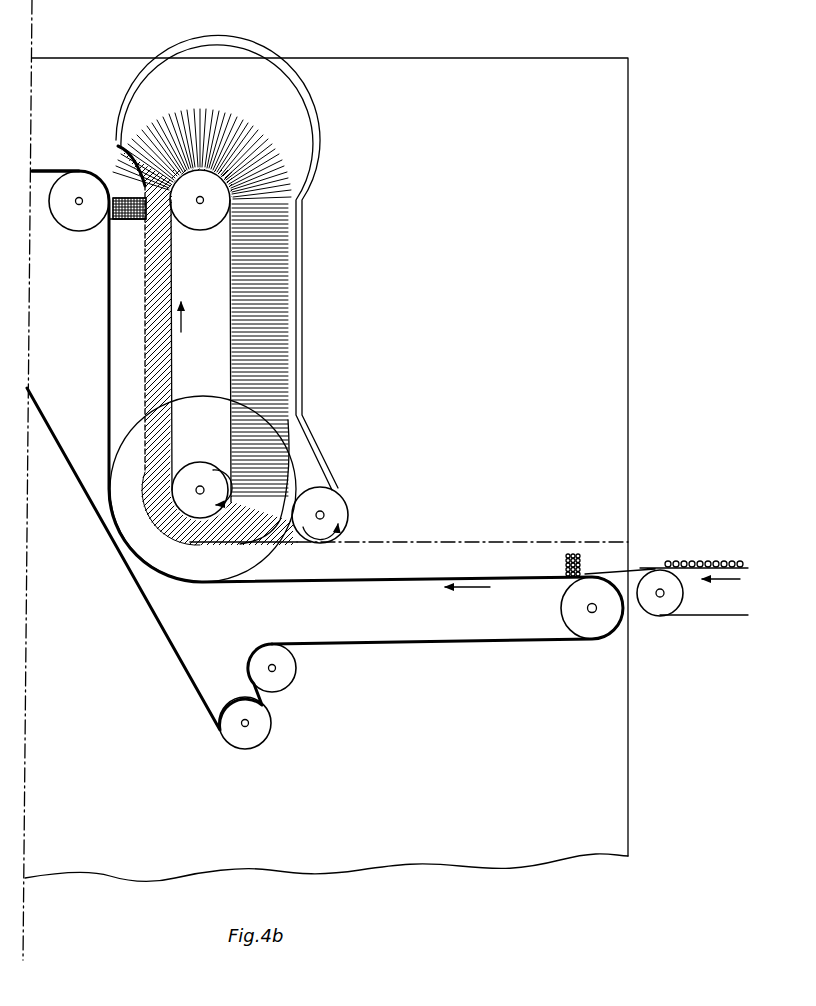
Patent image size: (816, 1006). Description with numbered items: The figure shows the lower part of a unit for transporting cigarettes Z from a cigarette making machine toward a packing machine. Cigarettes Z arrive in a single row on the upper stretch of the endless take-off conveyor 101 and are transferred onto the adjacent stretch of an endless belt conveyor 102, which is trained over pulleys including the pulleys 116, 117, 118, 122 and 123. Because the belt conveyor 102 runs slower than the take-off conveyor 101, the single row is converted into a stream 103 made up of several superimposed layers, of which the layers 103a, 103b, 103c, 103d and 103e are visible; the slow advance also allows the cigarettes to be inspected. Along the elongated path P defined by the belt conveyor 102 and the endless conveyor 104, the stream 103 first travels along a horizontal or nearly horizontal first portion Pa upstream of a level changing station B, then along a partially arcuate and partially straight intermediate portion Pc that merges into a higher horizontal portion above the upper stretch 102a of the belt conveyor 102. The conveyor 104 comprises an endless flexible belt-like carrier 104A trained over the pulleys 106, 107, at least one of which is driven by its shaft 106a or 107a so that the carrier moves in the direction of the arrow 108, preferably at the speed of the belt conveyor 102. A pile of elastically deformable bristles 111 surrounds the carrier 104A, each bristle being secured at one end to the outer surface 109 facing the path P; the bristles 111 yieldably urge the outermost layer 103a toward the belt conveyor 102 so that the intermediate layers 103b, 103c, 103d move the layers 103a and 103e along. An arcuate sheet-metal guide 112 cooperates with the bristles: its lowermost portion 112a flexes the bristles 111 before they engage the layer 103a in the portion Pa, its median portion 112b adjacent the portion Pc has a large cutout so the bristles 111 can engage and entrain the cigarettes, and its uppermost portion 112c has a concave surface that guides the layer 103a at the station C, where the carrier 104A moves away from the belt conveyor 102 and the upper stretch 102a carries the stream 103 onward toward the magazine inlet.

The take-off conveyor 101 is at (688, 576).
The belt conveyor 102 is at (108, 346).
The upper stretch 102a is at (46, 170).
The stream 103 is at (125, 219).
The outermost layer 103a is at (580, 556).
The layer 103b is at (580, 560).
The layer 103c is at (580, 564).
The layer 103d is at (580, 568).
The layer 103e is at (580, 572).
The endless conveyor 104 is at (292, 280).
The carrier 104A is at (172, 372).
The pulley 106 is at (197, 219).
The shaft 106a is at (206, 200).
The pulley 107 is at (218, 443).
The shaft 107a is at (197, 497).
The arrow 108 is at (186, 320).
The outer surface 109 is at (170, 388).
The bristles 111 is at (246, 139).
The arcuate guide 112 is at (292, 528).
The lowermost portion 112a is at (286, 560).
The median portion 112b is at (147, 370).
The uppermost portion 112c is at (120, 148).
The pulley 116 is at (593, 631).
The pulley 117 is at (199, 572).
The pulley 118 is at (66, 218).
The pulley 122 is at (265, 728).
The pulley 123 is at (285, 669).
The station C is at (127, 82).
The path P is at (143, 505).
The level changing station B is at (127, 553).
The cigarettes Z is at (676, 566).
The intermediate portion Pc is at (138, 311).
The first portion Pa is at (240, 574).